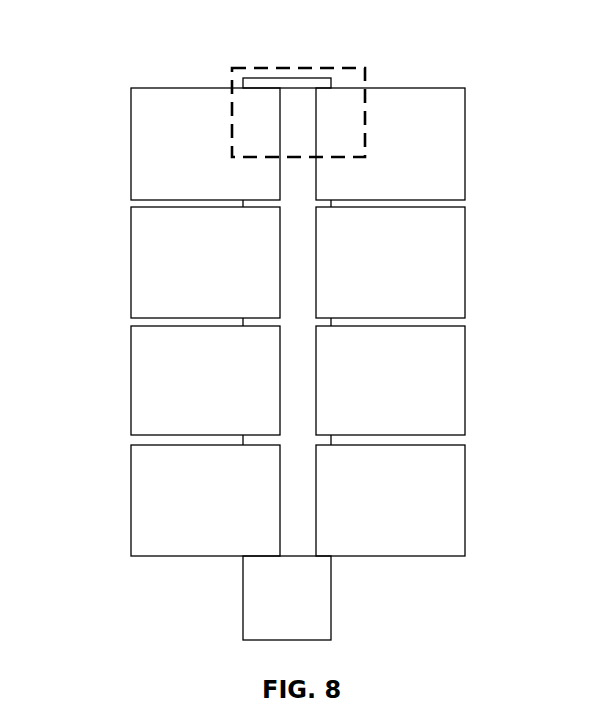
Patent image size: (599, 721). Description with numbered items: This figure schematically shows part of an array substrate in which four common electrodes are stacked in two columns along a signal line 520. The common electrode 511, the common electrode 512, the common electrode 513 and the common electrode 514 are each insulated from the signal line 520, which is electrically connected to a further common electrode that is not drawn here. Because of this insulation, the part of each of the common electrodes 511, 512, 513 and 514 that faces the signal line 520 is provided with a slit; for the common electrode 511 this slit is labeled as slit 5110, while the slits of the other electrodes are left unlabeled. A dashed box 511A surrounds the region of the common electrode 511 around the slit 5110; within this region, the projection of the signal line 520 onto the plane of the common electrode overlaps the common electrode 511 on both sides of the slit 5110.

The common electrode 511 is at (157, 142).
The common electrode 512 is at (157, 280).
The common electrode 513 is at (157, 392).
The common electrode 514 is at (157, 502).
The dashed box 511A is at (365, 69).
The slit 5110 is at (297, 103).
The signal line 520 is at (315, 625).